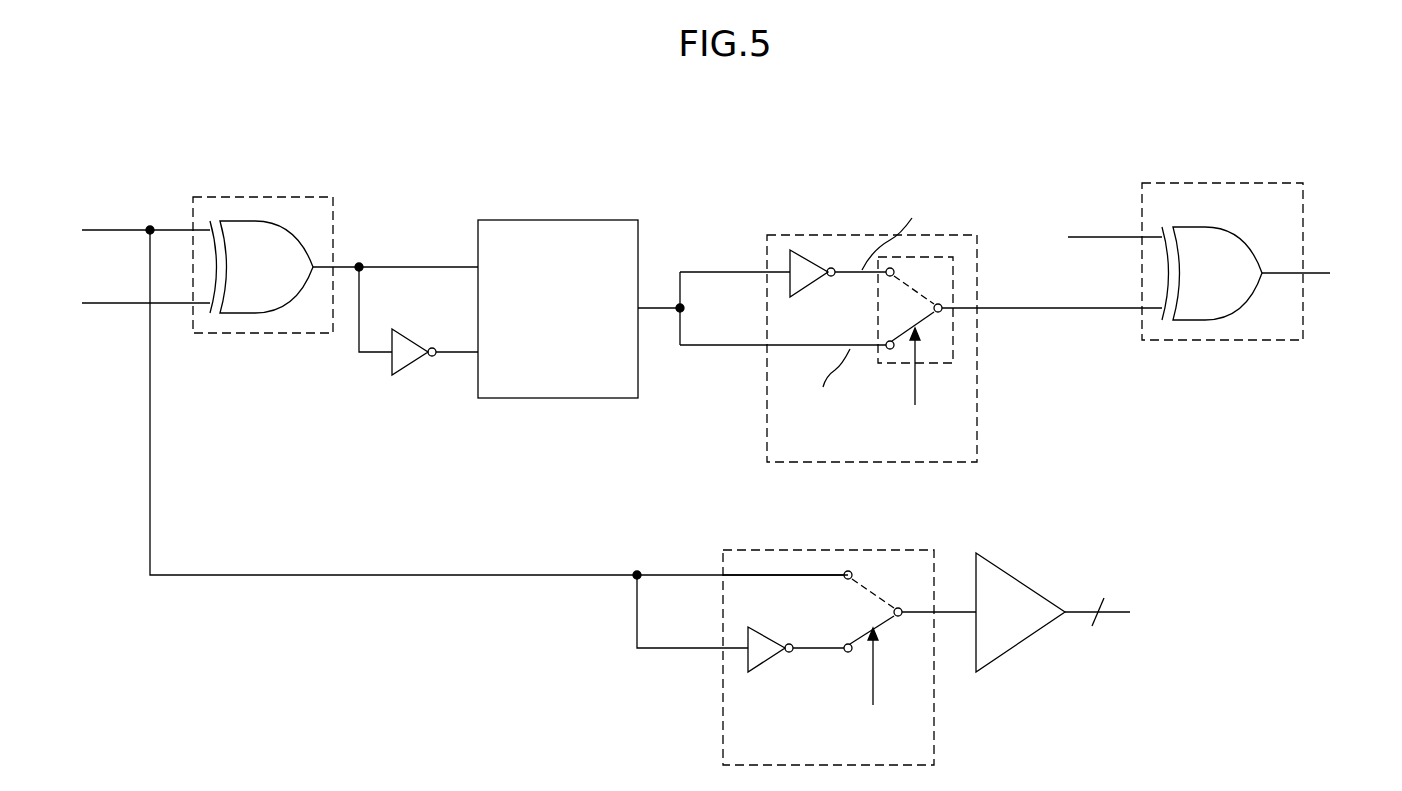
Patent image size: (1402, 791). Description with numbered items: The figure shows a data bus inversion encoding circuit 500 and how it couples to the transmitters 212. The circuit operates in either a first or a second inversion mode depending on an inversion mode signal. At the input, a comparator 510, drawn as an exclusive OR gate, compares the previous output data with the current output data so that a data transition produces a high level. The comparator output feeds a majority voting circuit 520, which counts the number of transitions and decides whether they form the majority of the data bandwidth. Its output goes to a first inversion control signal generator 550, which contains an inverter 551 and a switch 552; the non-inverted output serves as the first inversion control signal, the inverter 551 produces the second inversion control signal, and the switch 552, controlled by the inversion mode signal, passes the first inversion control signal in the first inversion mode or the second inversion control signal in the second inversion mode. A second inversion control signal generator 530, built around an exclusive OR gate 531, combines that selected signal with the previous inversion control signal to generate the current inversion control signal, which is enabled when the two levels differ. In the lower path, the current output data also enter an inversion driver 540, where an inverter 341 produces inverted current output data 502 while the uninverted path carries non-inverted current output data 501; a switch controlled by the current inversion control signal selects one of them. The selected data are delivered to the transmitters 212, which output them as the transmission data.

The data bus inversion encoding circuit 500 is at (428, 170).
The comparator 510 is at (281, 197).
The majority voting circuit 520 is at (586, 220).
The second inversion control signal generator 530 is at (1232, 183).
The exclusive OR gate 531 is at (1238, 238).
The first inversion control signal generator 550 is at (977, 410).
The inverter 551 is at (806, 250).
The switch 552 is at (953, 353).
The inversion driver 540 is at (846, 550).
The non-inverted current output data 501 is at (755, 572).
The inverted current output data 502 is at (812, 650).
The inverter 341 is at (770, 640).
The transmitters 212 is at (1020, 580).